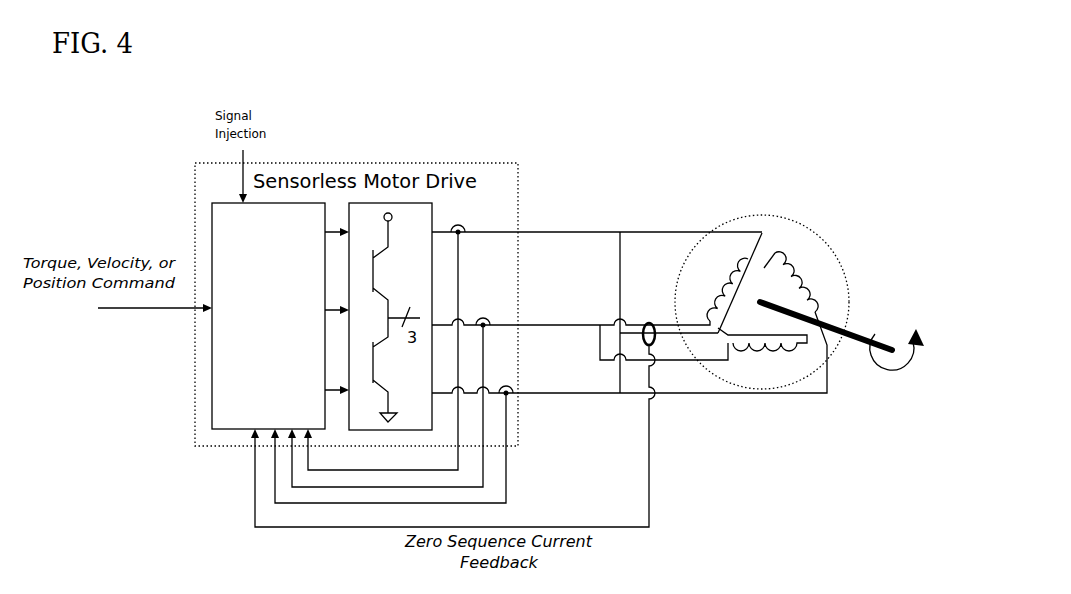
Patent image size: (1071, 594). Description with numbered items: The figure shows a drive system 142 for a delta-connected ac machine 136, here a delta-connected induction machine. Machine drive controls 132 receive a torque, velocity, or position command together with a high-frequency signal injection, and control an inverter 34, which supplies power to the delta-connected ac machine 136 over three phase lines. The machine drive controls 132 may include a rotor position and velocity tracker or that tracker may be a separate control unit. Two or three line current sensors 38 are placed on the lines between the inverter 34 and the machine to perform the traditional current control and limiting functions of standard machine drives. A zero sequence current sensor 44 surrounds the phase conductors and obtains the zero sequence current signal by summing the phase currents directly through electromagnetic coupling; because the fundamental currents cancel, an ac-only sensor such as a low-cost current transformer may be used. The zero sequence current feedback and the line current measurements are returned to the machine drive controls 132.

The machine drive controls 132 is at (278, 246).
The inverter 34 is at (418, 278).
The drive system 142 is at (503, 216).
The line current sensors 38 is at (484, 322).
The zero sequence current sensor 44 is at (647, 322).
The delta-connected ac machine 136 is at (744, 221).